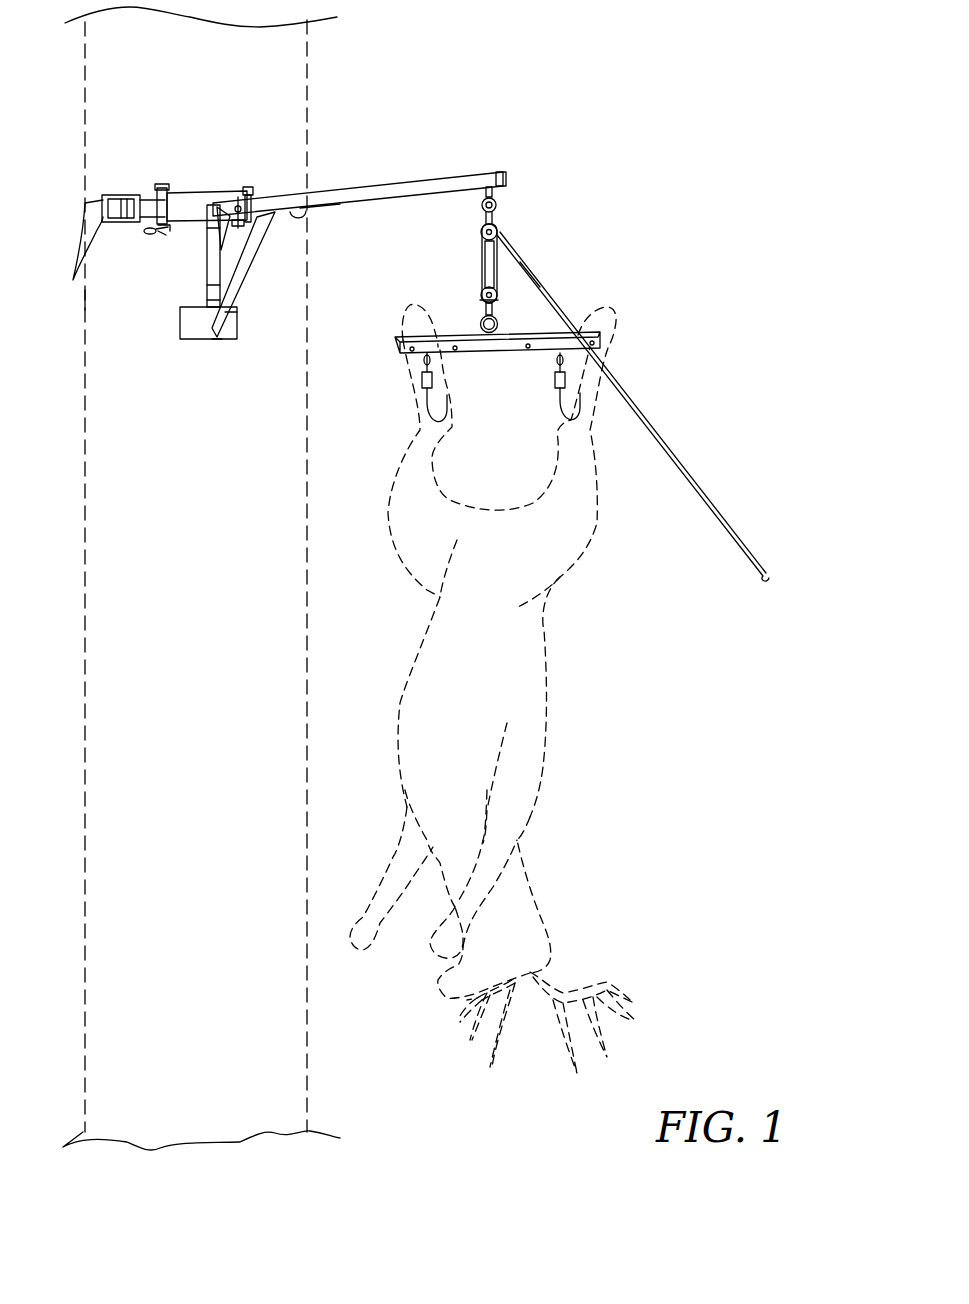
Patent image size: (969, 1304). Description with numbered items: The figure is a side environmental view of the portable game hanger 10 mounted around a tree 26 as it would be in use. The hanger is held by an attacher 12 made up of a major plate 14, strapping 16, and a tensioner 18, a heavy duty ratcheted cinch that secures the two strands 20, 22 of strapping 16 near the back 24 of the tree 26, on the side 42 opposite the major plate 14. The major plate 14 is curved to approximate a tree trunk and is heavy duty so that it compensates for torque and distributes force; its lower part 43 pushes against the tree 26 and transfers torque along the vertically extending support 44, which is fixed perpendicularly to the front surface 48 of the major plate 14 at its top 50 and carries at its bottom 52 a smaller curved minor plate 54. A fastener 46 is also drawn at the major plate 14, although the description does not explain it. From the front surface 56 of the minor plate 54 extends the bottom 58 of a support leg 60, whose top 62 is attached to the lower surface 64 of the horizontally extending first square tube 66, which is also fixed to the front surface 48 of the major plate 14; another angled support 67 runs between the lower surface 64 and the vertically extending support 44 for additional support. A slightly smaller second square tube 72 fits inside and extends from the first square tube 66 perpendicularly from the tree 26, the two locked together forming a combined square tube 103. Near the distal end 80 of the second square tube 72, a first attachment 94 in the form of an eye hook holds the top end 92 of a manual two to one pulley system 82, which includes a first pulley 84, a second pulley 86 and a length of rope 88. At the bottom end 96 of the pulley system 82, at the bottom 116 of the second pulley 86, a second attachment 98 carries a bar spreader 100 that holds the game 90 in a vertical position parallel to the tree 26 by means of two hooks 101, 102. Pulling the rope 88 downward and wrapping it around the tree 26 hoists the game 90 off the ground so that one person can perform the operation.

The portable game hanger 10 is at (232, 130).
The attacher 12 is at (282, 148).
The major plate 14 is at (185, 191).
The strapping 16 is at (85, 214).
The tensioner 18 is at (120, 195).
The first strand of strapping 20 is at (302, 216).
The second strand of strapping 22 is at (153, 188).
The back of tree 24 is at (85, 300).
The tree 26 is at (308, 350).
The side of tree 42 is at (85, 122).
The lower part of major plate 43 is at (185, 242).
The vertically extending support 44 is at (258, 302).
The bolt 46 is at (217, 190).
The front surface of major plate 48 is at (150, 232).
The top of vertically extending support 50 is at (210, 262).
The bottom of vertically extending support 52 is at (206, 298).
The minor plate 54 is at (200, 339).
The front surface of minor plate 56 is at (236, 325).
The bottom of support leg 58 is at (217, 339).
The support leg 60 is at (240, 238).
The top of support leg 62 is at (340, 198).
The lower surface of horizontally extending support 64 is at (210, 286).
The first square tube 66 is at (275, 200).
The angled support 67 is at (207, 240).
The second square tube 72 is at (452, 183).
The end of second square tube 80 is at (502, 178).
The pulley system 82 is at (500, 263).
The first pulley 84 is at (498, 232).
The second pulley 86 is at (538, 290).
The rope 88 is at (680, 458).
The game 90 is at (548, 700).
The top end of pulley system 92 is at (500, 214).
The first attachment 94 is at (498, 204).
The bottom end of pulley system 96 is at (498, 300).
The second attachment 98 is at (499, 326).
The bar spreader 100 is at (600, 342).
The first hook 101 is at (444, 398).
The second hook 102 is at (568, 420).
The combined square tube 103 is at (400, 168).
The bottom of second pulley 116 is at (483, 305).